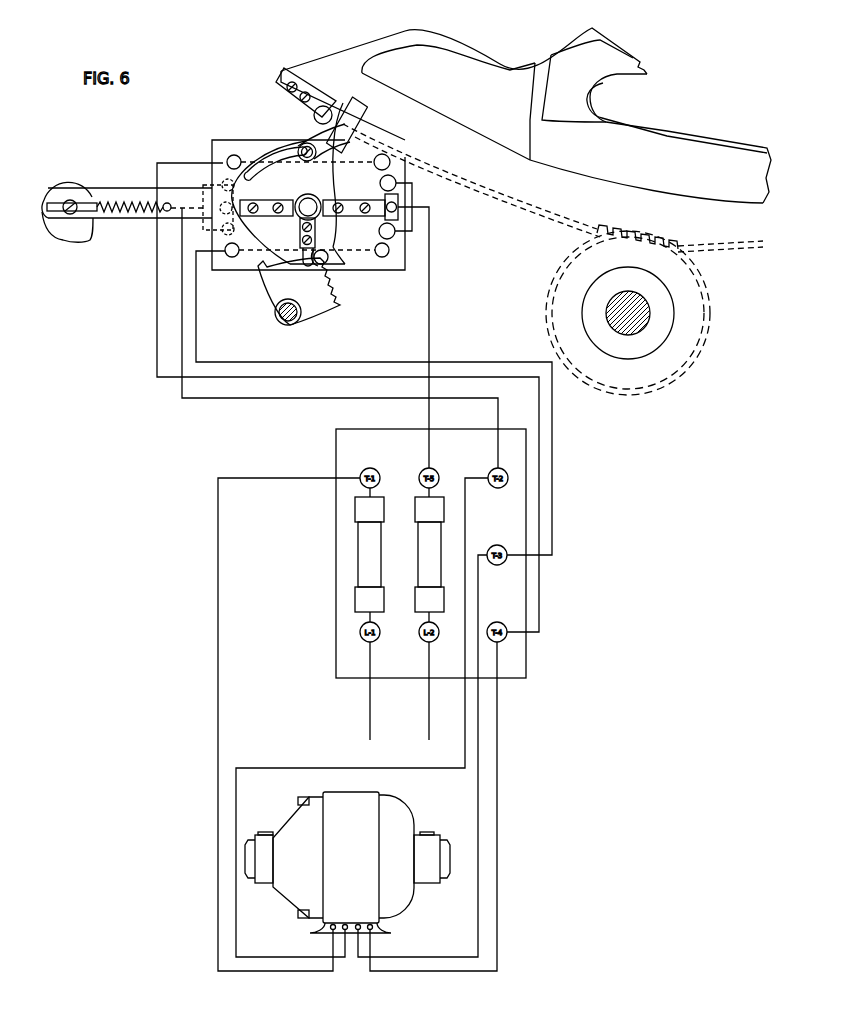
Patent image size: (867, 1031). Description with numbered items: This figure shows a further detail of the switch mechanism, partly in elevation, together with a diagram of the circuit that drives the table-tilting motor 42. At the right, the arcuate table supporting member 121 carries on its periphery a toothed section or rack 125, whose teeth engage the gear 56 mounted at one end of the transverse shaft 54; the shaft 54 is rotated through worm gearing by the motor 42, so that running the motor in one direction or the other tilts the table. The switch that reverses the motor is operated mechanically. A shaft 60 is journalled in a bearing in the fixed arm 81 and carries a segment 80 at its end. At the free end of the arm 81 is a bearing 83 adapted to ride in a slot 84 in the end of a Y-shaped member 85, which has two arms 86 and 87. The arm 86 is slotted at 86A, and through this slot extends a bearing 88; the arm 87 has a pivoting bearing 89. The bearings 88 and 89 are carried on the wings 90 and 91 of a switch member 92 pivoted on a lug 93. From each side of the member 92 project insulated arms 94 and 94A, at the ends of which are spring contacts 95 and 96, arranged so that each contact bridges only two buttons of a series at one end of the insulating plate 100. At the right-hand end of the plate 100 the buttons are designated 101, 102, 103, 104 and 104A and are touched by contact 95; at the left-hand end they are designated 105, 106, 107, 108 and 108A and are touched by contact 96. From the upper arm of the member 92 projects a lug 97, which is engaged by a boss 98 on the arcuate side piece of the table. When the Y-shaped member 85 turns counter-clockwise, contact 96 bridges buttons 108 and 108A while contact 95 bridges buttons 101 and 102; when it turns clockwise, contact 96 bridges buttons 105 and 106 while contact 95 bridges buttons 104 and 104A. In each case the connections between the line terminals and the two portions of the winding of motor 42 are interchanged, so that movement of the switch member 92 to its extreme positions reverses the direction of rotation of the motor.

The motor 42 is at (413, 815).
The transverse shaft 54 is at (640, 330).
The gear 56 is at (708, 342).
The shaft 60 is at (288, 314).
The segment 80 is at (322, 306).
The fixed arm 81 is at (72, 238).
The bearing 83 is at (71, 200).
The slot 84 is at (50, 203).
The Y-shaped member 85 is at (138, 188).
The arm 86 is at (262, 156).
The slot 86A is at (274, 150).
The arm 87 is at (283, 262).
The bearing 88 is at (306, 151).
The pivoting bearing 89 is at (328, 262).
The wing 90 is at (322, 182).
The wing 91 is at (335, 236).
The switch member 92 is at (302, 202).
The lug 93 is at (325, 204).
The insulated arm 94 is at (258, 214).
The insulated arm 94A is at (352, 212).
The spring contact 95 is at (393, 230).
The spring contact 96 is at (218, 185).
The lug 97 is at (342, 103).
The boss 98 is at (314, 116).
The insulating plate 100 is at (405, 260).
The button 101 is at (384, 160).
The button 102 is at (396, 183).
The button 103 is at (398, 208).
The button 104 is at (395, 231).
The button 104A is at (384, 257).
The button 105 is at (234, 155).
The button 106 is at (222, 185).
The button 107 is at (220, 209).
The button 108 is at (222, 230).
The button 108A is at (226, 252).
The arcuate table supporting member 121 is at (720, 247).
The rack 125 is at (597, 230).